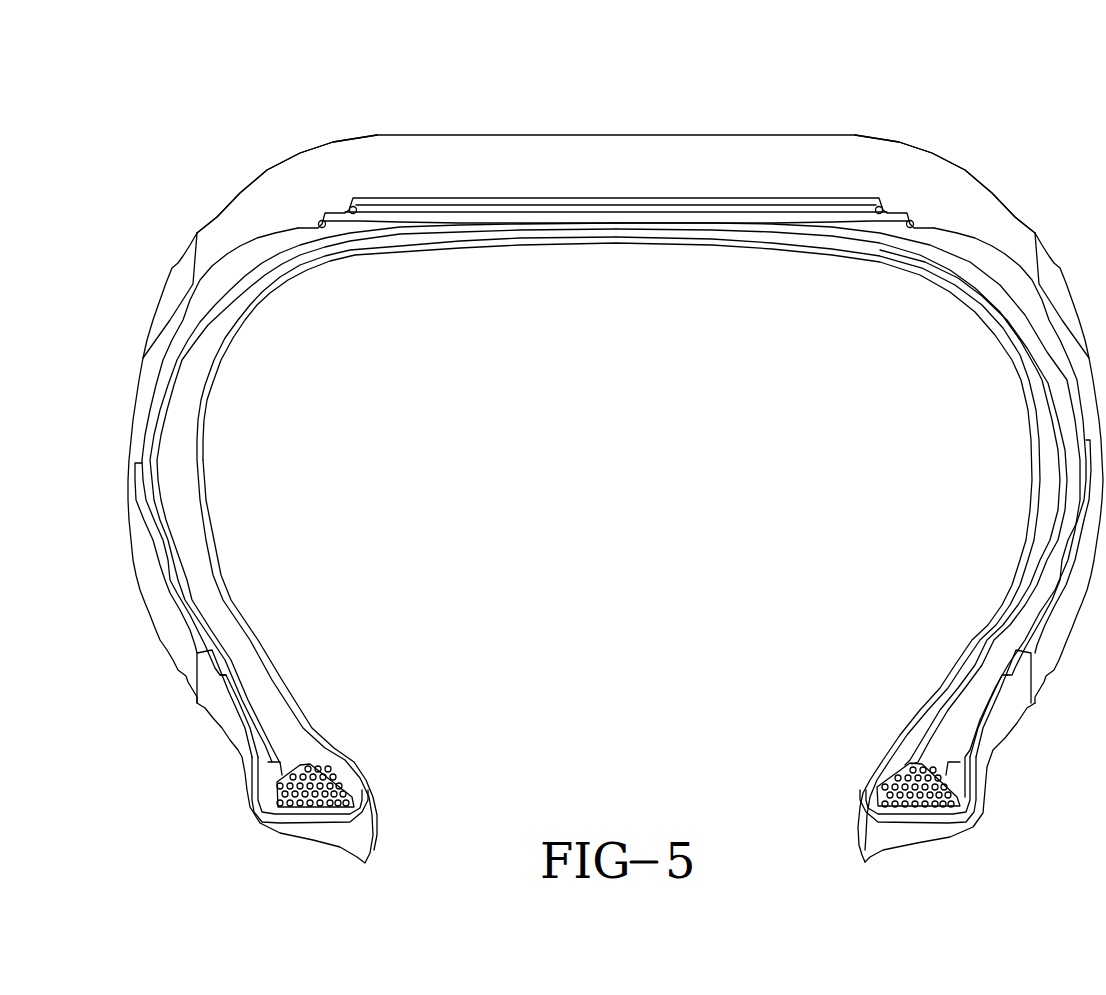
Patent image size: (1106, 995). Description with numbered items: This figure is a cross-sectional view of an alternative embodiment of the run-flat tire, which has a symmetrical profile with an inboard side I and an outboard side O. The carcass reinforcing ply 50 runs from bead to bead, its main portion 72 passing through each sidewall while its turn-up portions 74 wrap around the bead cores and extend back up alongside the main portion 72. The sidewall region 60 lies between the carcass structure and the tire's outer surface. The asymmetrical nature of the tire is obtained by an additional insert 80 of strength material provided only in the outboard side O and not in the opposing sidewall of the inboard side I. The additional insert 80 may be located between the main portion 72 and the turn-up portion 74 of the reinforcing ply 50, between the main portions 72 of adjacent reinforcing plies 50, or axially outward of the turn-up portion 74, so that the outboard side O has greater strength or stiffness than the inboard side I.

The carcass reinforcing ply 50 is at (173, 350).
The sidewall 60 is at (175, 497).
The main portion of the carcass reinforcing ply 72 is at (192, 595).
The turn-up portion of the carcass reinforcing ply 74 is at (168, 580).
The additional insert 80 is at (1055, 368).
The inboard side I is at (222, 132).
The outboard side O is at (1012, 132).